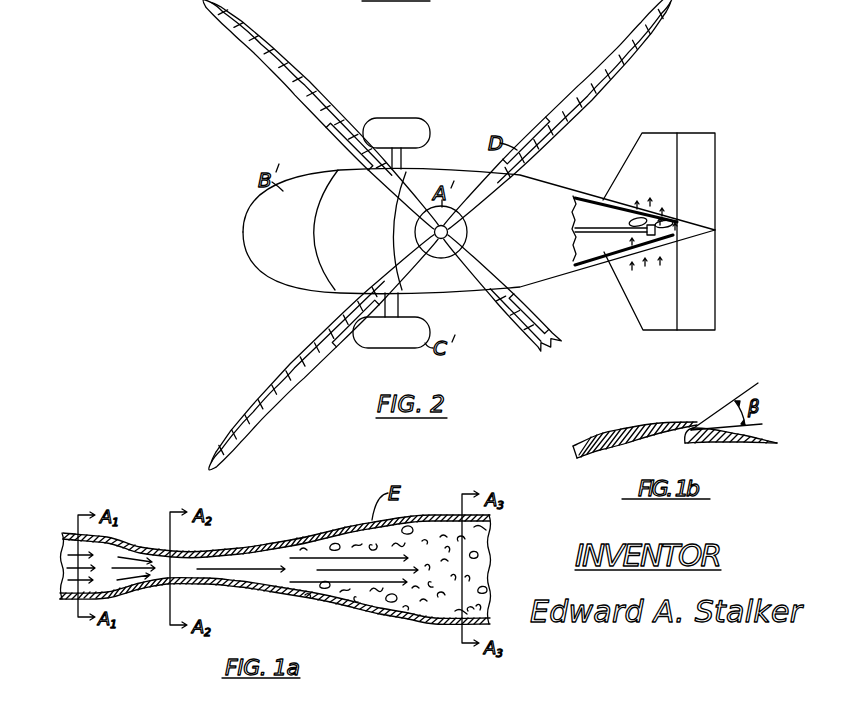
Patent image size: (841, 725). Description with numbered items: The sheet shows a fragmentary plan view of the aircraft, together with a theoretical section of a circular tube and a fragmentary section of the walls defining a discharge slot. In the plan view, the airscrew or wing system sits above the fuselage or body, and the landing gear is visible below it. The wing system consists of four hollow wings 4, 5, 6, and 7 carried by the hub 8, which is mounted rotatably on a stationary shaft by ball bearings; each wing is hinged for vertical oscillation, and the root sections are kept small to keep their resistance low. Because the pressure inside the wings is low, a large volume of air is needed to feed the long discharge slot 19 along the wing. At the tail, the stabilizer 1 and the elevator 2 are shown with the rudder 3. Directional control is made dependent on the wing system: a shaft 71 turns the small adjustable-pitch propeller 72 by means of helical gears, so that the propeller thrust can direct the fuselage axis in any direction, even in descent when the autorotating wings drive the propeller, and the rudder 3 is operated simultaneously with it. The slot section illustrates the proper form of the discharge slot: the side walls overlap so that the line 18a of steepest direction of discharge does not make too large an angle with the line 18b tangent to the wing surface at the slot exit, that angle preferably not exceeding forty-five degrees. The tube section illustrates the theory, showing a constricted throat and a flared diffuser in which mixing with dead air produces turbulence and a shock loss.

In FIG. 2, the stabilizer 1 is at (646, 329).
In FIG. 2, the elevator 2 is at (685, 329).
In FIG. 2, the rudder 3 is at (692, 228).
In FIG. 2, the wing 4 is at (663, 12).
In FIG. 2, the wing 5 is at (322, 84).
In FIG. 2, the wing 6 is at (277, 408).
In FIG. 2, the wing 7 is at (551, 323).
In FIG. 2, the hub 8 is at (468, 232).
In FIG. 2, the discharge slot 19 is at (301, 367).
In FIG. 2, the shaft 71 is at (603, 227).
In FIG. 2, the propeller 72 is at (640, 204).
In FIG. 1b, the line of steepest direction of discharge 18a is at (747, 388).
In FIG. 1b, the line tangent to the wing surface at the slot exit 18b is at (762, 420).